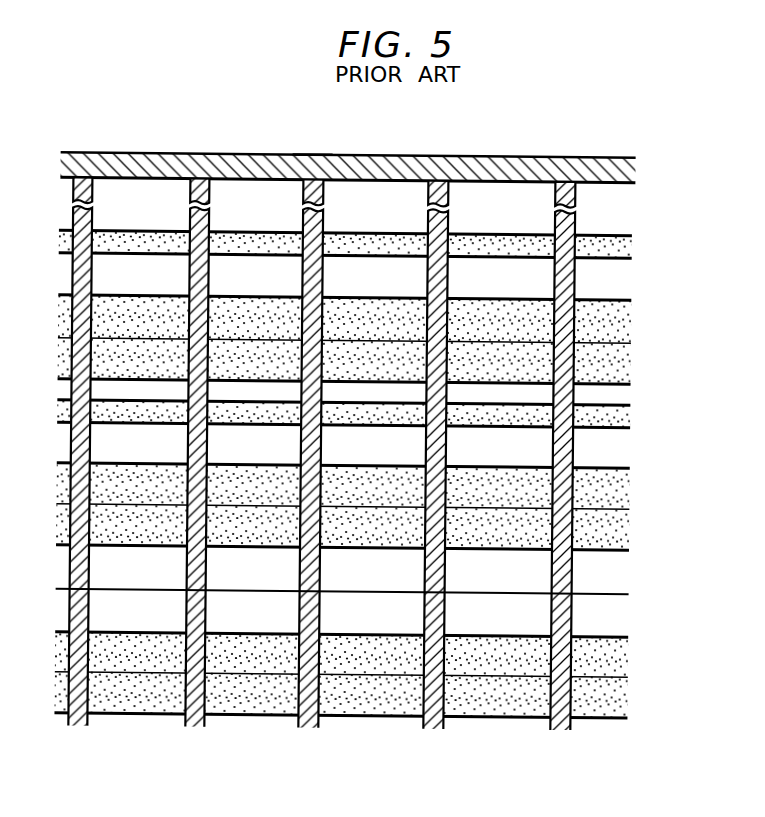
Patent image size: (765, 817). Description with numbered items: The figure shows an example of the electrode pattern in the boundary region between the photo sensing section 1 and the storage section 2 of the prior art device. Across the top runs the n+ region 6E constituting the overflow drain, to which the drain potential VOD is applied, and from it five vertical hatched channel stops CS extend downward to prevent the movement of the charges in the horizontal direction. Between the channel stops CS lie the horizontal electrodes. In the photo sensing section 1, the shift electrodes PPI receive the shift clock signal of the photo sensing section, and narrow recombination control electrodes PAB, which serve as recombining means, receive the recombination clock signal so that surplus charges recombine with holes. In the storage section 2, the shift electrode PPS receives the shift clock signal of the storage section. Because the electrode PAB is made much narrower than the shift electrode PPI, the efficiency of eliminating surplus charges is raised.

The n+ region constituting the overflow drain 6E is at (618, 167).
The drive voltage VOD is at (309, 155).
The recombination control electrode PAB is at (653, 425).
The shift electrode of the photo sensing section PPI is at (653, 298).
The shift electrode of the storage section PPS is at (653, 634).
The channel stop CS is at (83, 729).
The photo sensing section 1 is at (40, 180).
The storage section 2 is at (33, 740).